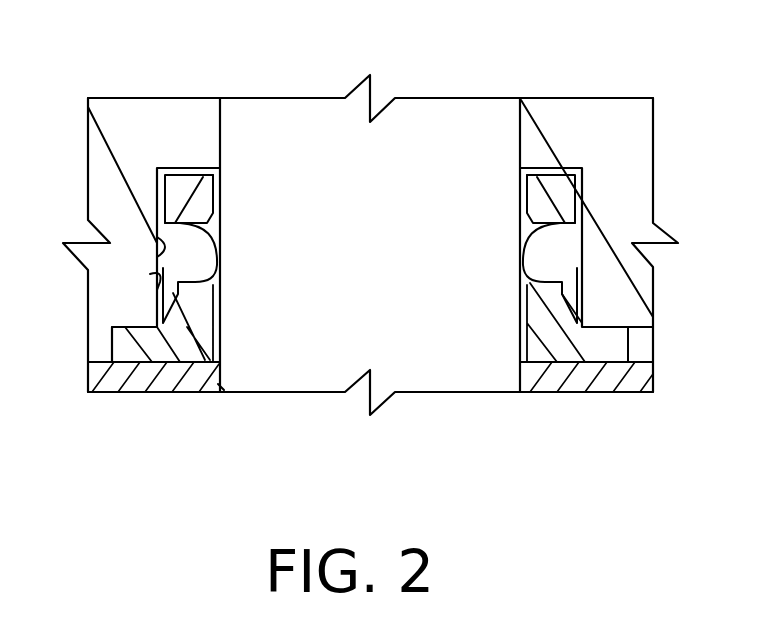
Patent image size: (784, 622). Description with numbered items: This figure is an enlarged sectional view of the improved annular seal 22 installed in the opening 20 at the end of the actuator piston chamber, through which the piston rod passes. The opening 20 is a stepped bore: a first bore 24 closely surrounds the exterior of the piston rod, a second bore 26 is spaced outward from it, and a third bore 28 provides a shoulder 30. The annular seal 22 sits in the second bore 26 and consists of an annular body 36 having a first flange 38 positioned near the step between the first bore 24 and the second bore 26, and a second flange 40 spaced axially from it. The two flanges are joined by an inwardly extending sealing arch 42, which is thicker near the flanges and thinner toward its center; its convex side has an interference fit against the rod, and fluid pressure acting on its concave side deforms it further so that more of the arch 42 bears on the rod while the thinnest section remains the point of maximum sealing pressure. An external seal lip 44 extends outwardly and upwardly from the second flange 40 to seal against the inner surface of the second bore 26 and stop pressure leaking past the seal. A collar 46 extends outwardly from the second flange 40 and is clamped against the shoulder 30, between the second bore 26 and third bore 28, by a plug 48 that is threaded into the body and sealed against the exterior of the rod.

The opening 20 is at (519, 153).
The annular seal 22 is at (515, 243).
The first bore 24 is at (219, 135).
The second bore 26 is at (160, 245).
The third bore 28 is at (121, 327).
The shoulder 30 is at (605, 327).
The annular body 36 is at (582, 265).
The first flange 38 is at (583, 187).
The second flange 40 is at (519, 332).
The sealing arch 42 is at (525, 253).
The external seal lip 44 is at (150, 274).
The collar 46 is at (628, 352).
The plug 48 is at (222, 388).